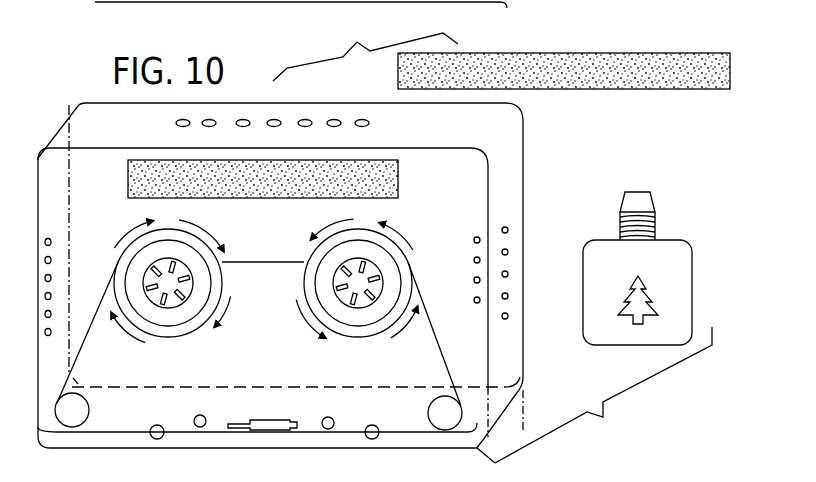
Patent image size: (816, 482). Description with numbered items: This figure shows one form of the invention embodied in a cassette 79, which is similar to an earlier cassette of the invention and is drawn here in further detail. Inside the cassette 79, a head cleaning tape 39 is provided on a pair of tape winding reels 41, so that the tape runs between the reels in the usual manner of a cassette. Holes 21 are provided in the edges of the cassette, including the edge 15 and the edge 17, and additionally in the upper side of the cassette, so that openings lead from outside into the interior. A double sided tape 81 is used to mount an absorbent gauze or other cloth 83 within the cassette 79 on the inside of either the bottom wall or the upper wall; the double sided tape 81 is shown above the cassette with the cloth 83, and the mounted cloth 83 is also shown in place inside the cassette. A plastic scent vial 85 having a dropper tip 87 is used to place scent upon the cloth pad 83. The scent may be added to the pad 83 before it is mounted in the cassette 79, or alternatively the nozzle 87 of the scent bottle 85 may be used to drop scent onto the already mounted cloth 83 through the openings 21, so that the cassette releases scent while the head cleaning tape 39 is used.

The edge 15 is at (523, 135).
The edge 17 is at (57, 187).
The holes 21 is at (513, 236).
The head cleaning tape 39 is at (440, 334).
The tape winding reels 41 is at (311, 240).
The cassette 79 is at (564, 352).
The double sided tape 81 is at (628, 50).
The absorbent gauze or cloth 83 is at (407, 169).
The plastic scent vial 85 is at (585, 313).
The dropper tip 87 is at (651, 204).